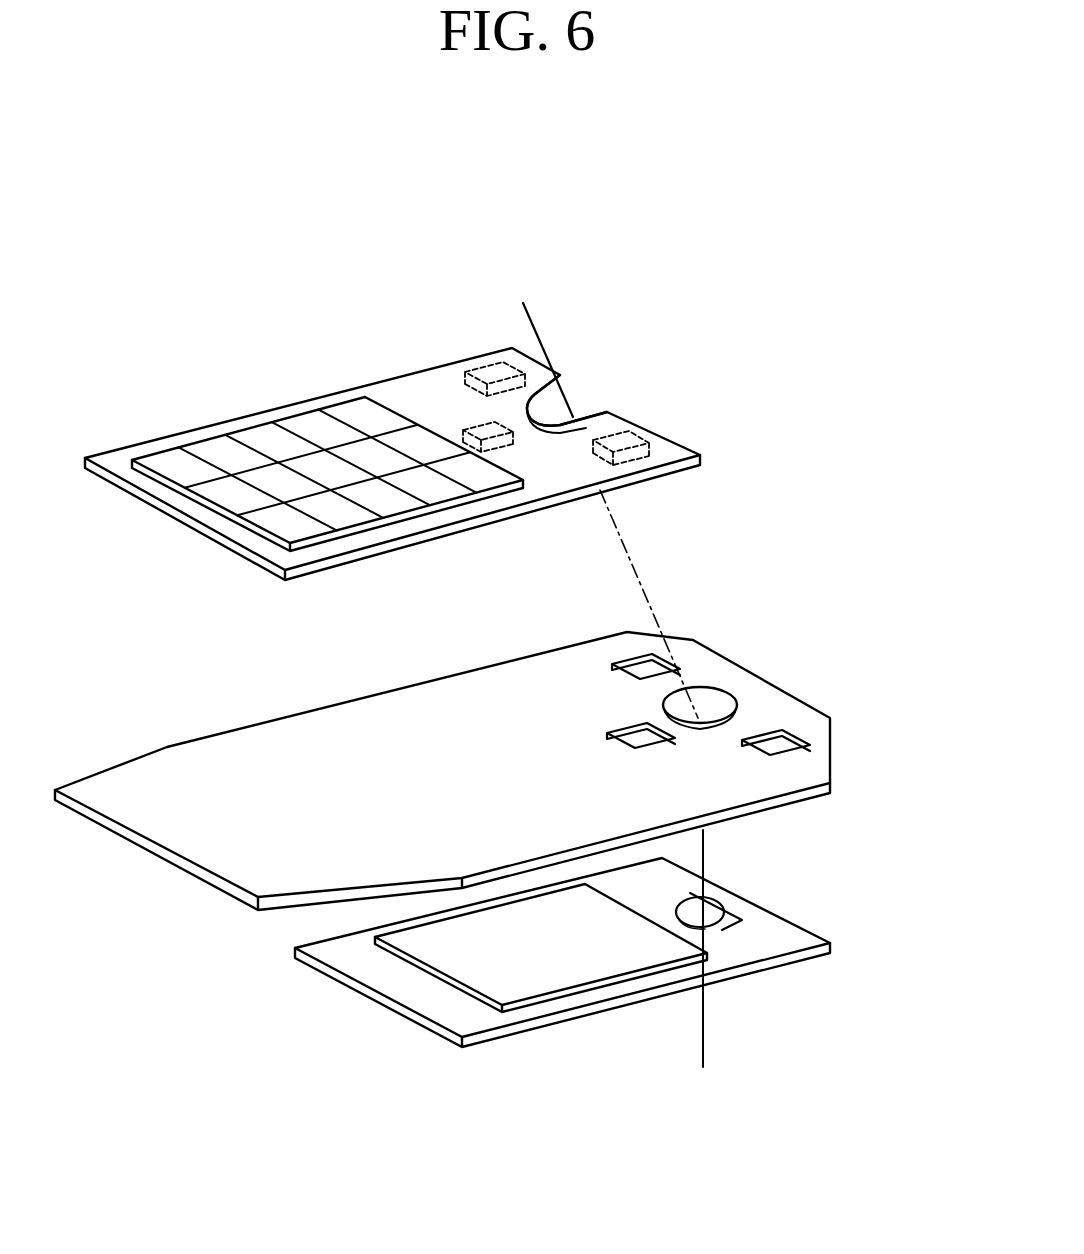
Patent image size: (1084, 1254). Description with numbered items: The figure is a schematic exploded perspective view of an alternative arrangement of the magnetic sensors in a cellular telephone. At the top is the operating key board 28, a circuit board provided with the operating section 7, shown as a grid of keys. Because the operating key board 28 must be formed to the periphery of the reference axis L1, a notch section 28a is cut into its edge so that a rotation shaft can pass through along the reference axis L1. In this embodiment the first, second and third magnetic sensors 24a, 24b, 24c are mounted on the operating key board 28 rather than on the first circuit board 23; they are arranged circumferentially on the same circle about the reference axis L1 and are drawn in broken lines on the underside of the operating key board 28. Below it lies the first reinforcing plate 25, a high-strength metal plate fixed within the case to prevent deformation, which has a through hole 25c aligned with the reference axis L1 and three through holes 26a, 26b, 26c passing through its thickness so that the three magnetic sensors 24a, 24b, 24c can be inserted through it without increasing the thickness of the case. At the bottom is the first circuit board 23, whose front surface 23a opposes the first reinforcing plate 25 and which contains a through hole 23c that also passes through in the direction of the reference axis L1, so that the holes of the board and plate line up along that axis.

The operating section 7 is at (281, 414).
The first circuit board 23 is at (374, 993).
The front surface of first circuit board 23a is at (787, 943).
The through hole of first circuit board 23c is at (723, 897).
The first magnetic sensor 24a is at (663, 482).
The second magnetic sensor 24b is at (513, 437).
The third magnetic sensor 24c is at (468, 378).
The first reinforcing plate 25 is at (163, 855).
The through hole of first reinforcing plate 25c is at (700, 690).
The first through hole of reinforcing plate 26a is at (783, 728).
The second through hole of reinforcing plate 26b is at (627, 724).
The third through hole of reinforcing plate 26c is at (640, 655).
The operating key board 28 is at (180, 515).
The notch section 28a is at (607, 413).
The reference axis L1 is at (537, 328).